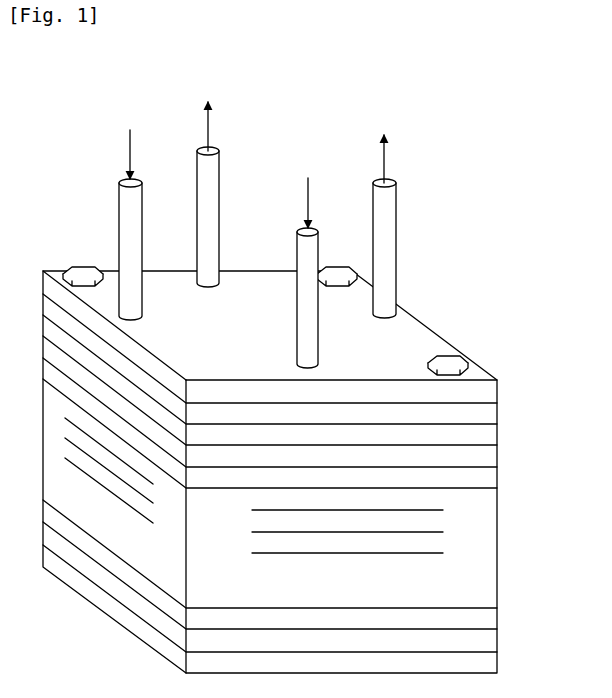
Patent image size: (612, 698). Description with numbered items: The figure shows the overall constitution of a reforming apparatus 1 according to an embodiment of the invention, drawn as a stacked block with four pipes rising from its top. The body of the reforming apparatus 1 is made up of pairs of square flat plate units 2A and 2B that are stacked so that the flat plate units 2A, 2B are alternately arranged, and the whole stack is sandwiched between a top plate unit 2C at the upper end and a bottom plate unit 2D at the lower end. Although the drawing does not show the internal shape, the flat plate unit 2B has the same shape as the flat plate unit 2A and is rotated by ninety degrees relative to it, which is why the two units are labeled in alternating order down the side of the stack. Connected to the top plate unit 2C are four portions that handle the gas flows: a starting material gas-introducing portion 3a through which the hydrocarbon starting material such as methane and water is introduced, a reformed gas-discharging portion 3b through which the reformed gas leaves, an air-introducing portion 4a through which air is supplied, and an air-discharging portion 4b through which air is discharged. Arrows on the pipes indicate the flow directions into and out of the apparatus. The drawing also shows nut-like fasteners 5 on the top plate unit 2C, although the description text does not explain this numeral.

The reforming apparatus 1 is at (465, 211).
The flat plate unit 2A is at (551, 441).
The flat plate unit 2B is at (497, 432).
The top plate unit 2C is at (497, 390).
The bottom plate unit 2D is at (497, 662).
The starting material gas-introducing portion 3a is at (119, 228).
The reformed gas-discharging portion 3b is at (397, 230).
The air-introducing portion 4a is at (297, 252).
The air-discharging portion 4b is at (220, 199).
The fastening nut 5 is at (447, 352).